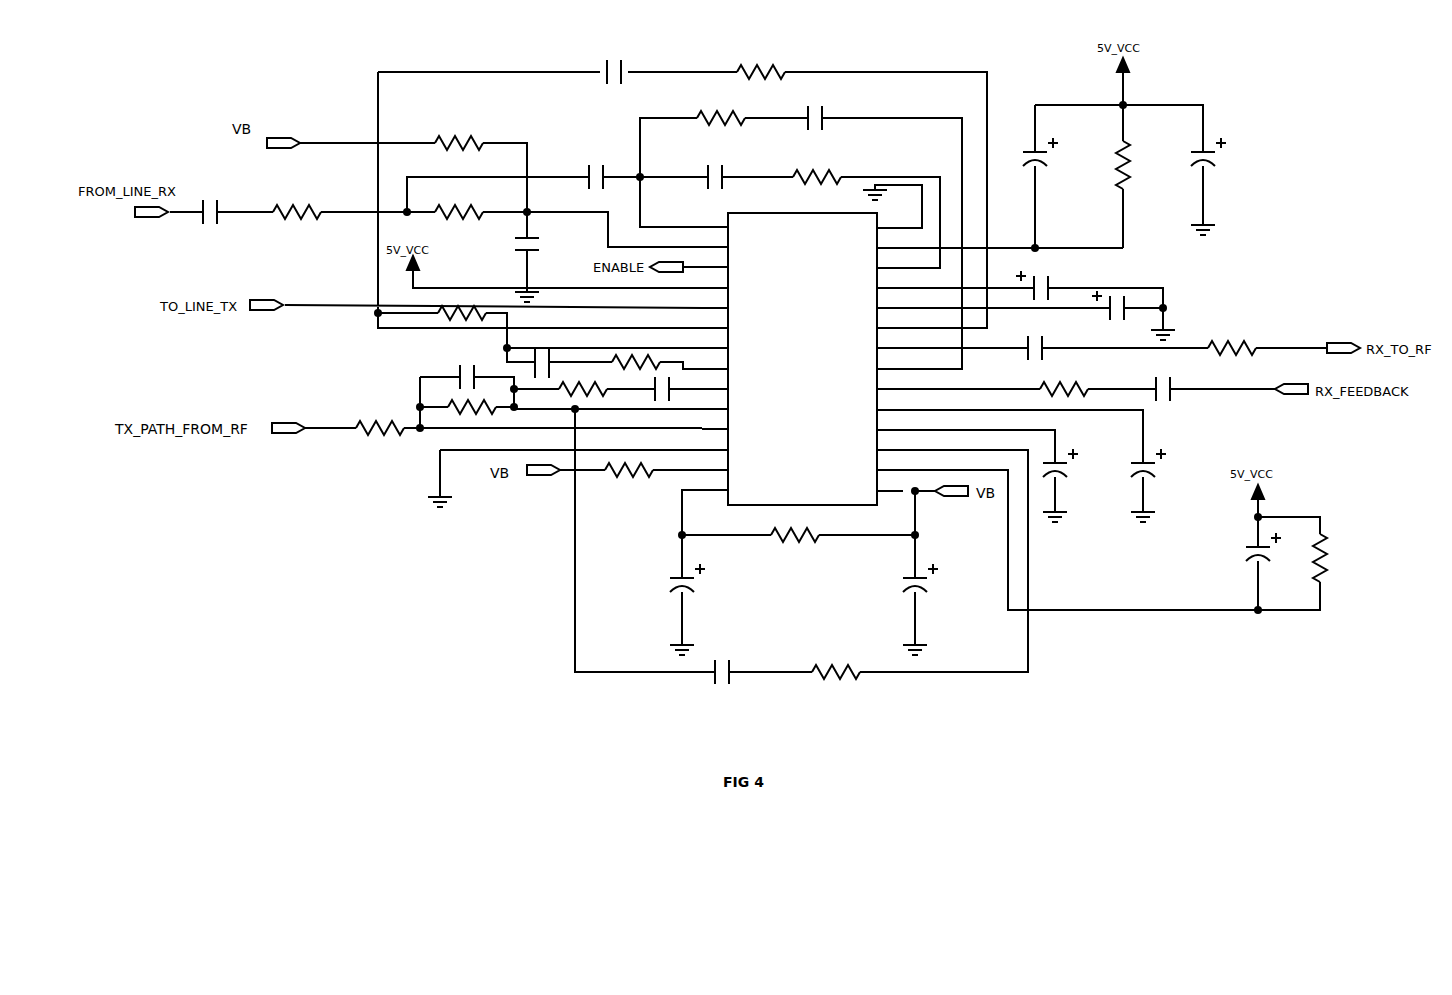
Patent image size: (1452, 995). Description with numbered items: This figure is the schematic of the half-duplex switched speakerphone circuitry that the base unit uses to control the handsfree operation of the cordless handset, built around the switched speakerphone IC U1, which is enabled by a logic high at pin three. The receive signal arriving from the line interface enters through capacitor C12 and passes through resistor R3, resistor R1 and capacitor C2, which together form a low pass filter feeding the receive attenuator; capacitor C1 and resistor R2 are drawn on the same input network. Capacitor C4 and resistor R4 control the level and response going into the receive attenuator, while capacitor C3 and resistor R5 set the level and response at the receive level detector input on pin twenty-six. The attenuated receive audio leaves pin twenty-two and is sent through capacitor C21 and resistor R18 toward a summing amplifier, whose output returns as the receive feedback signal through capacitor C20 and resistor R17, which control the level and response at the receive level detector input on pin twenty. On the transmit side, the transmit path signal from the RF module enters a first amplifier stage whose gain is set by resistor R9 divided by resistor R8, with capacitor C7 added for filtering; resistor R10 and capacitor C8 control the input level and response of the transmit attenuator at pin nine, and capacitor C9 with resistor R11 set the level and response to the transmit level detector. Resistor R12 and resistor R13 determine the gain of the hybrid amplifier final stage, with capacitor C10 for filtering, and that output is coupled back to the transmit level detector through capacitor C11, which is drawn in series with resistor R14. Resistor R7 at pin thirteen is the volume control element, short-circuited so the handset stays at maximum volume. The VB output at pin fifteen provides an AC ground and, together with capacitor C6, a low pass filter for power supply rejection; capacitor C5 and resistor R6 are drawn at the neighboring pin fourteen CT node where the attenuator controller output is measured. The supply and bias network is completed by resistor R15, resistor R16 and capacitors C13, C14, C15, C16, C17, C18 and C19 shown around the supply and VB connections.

The switched speakerphone IC U1 is at (802, 358).
The resistor R1 is at (459, 202).
The resistor R2 is at (459, 133).
The resistor R3 is at (297, 201).
The resistor R4 is at (721, 108).
The resistor R5 is at (817, 167).
The resistor R6 is at (795, 526).
The resistor R7 is at (626, 483).
The resistor R8 is at (380, 417).
The resistor R9 is at (480, 414).
The resistor R10 is at (583, 398).
The resistor R11 is at (836, 661).
The resistor R12 is at (636, 370).
The resistor R13 is at (462, 303).
The resistor R14 is at (761, 61).
The resistor 100k R15 is at (1142, 165).
The resistor R16 is at (1337, 558).
The resistor R17 is at (1064, 379).
The resistor R18 is at (1232, 337).
The capacitor C1 is at (543, 243).
The capacitor C2 is at (593, 168).
The capacitor C3 is at (712, 168).
The capacitor C4 is at (814, 108).
The electrolytic capacitor C5 is at (700, 578).
The capacitor C6 is at (934, 578).
The capacitor C7 is at (470, 367).
The capacitor C8 is at (651, 392).
The capacitor C9 is at (725, 659).
The capacitor C10 is at (532, 364).
The capacitor C11 is at (614, 60).
The capacitor C12 is at (218, 200).
The electrolytic capacitor C13 is at (1074, 463).
The electrolytic capacitor C14 is at (1162, 463).
The electrolytic capacitor C15 is at (1039, 276).
The electrolytic capacitor C16 is at (1111, 314).
The electrolytic capacitor 47u C17 is at (1059, 158).
The electrolytic capacitor C18 is at (1240, 547).
The electrolytic capacitor C19 is at (1227, 158).
The capacitor C20 is at (1150, 387).
The capacitor C21 is at (1034, 338).